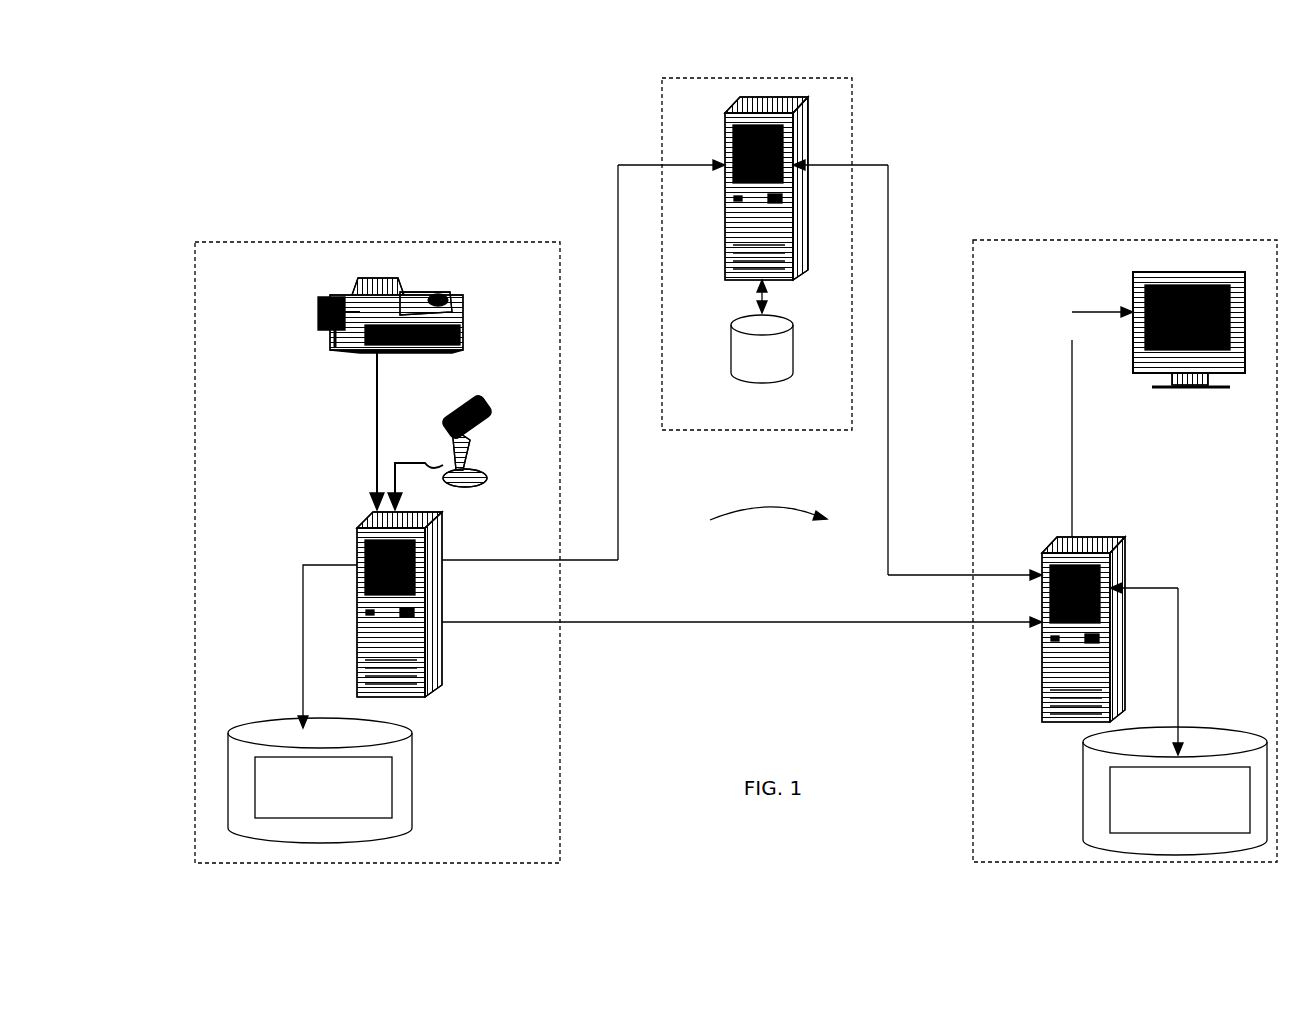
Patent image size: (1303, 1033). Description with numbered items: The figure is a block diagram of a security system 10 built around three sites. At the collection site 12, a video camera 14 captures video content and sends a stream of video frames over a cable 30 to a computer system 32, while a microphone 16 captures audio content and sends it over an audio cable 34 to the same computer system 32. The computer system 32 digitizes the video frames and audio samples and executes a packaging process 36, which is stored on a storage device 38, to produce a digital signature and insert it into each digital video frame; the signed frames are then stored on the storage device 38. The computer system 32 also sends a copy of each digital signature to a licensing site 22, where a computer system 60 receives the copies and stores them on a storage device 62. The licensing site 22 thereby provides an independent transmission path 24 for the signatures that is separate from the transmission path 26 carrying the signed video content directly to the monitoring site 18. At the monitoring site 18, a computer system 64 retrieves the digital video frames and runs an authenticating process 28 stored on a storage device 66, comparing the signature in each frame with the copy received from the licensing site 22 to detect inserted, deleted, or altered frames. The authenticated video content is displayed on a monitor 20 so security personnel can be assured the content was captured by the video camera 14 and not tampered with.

The security system 10 is at (1105, 98).
The collection site 12 is at (505, 242).
The video camera 14 is at (465, 327).
The microphone 16 is at (490, 412).
The monitoring site 18 is at (1218, 240).
The monitor 20 is at (1132, 290).
The licensing site 22 is at (837, 78).
The independent transmission path 24 is at (752, 512).
The transmission path 26 is at (798, 620).
The authenticating process 28 is at (1110, 793).
The cable 30 is at (373, 442).
The computer system 32 is at (442, 542).
The audio cable 34 is at (415, 462).
The packaging process 36 is at (392, 793).
The storage device 38 is at (415, 777).
The computer system 60 is at (810, 238).
The storage device 62 is at (795, 350).
The computer system 64 is at (1113, 530).
The storage device 66 is at (1207, 723).